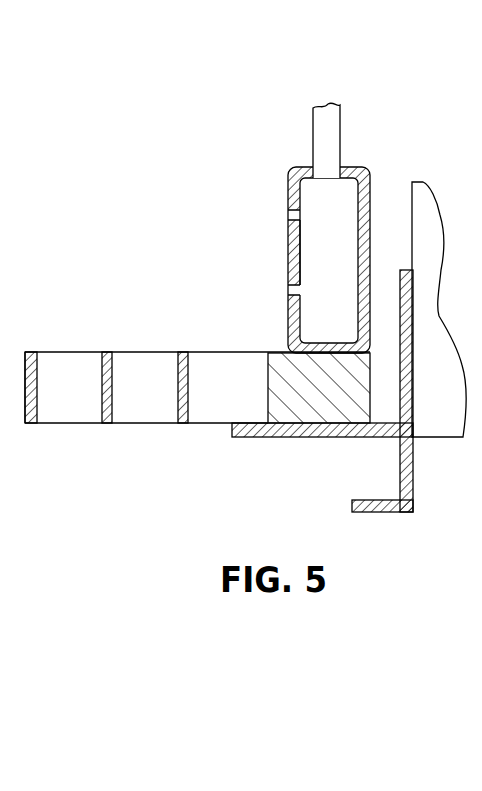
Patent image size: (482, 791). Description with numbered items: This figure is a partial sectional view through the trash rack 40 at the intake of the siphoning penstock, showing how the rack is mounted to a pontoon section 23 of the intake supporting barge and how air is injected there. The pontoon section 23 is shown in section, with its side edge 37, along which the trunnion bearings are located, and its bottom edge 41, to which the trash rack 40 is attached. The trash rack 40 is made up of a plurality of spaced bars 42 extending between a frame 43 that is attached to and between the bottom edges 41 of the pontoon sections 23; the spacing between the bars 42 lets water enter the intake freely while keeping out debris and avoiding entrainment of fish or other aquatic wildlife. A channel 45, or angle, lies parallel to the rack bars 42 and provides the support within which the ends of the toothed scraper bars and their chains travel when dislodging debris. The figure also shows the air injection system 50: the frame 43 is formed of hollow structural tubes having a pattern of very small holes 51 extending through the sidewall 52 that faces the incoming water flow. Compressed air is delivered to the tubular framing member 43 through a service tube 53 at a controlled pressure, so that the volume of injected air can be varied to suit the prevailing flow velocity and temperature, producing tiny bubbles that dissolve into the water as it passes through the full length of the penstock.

The pontoon section 23 is at (440, 315).
The side edge 37 is at (411, 203).
The trash rack 40 is at (197, 365).
The bottom edge 41 is at (345, 411).
The spaced bar 42 is at (157, 451).
The frame 43 is at (278, 355).
The channel 45 is at (380, 513).
The air injection system 50 is at (297, 233).
The hole 51 is at (281, 215).
The sidewall 52 is at (300, 254).
The service tube 53 is at (345, 112).